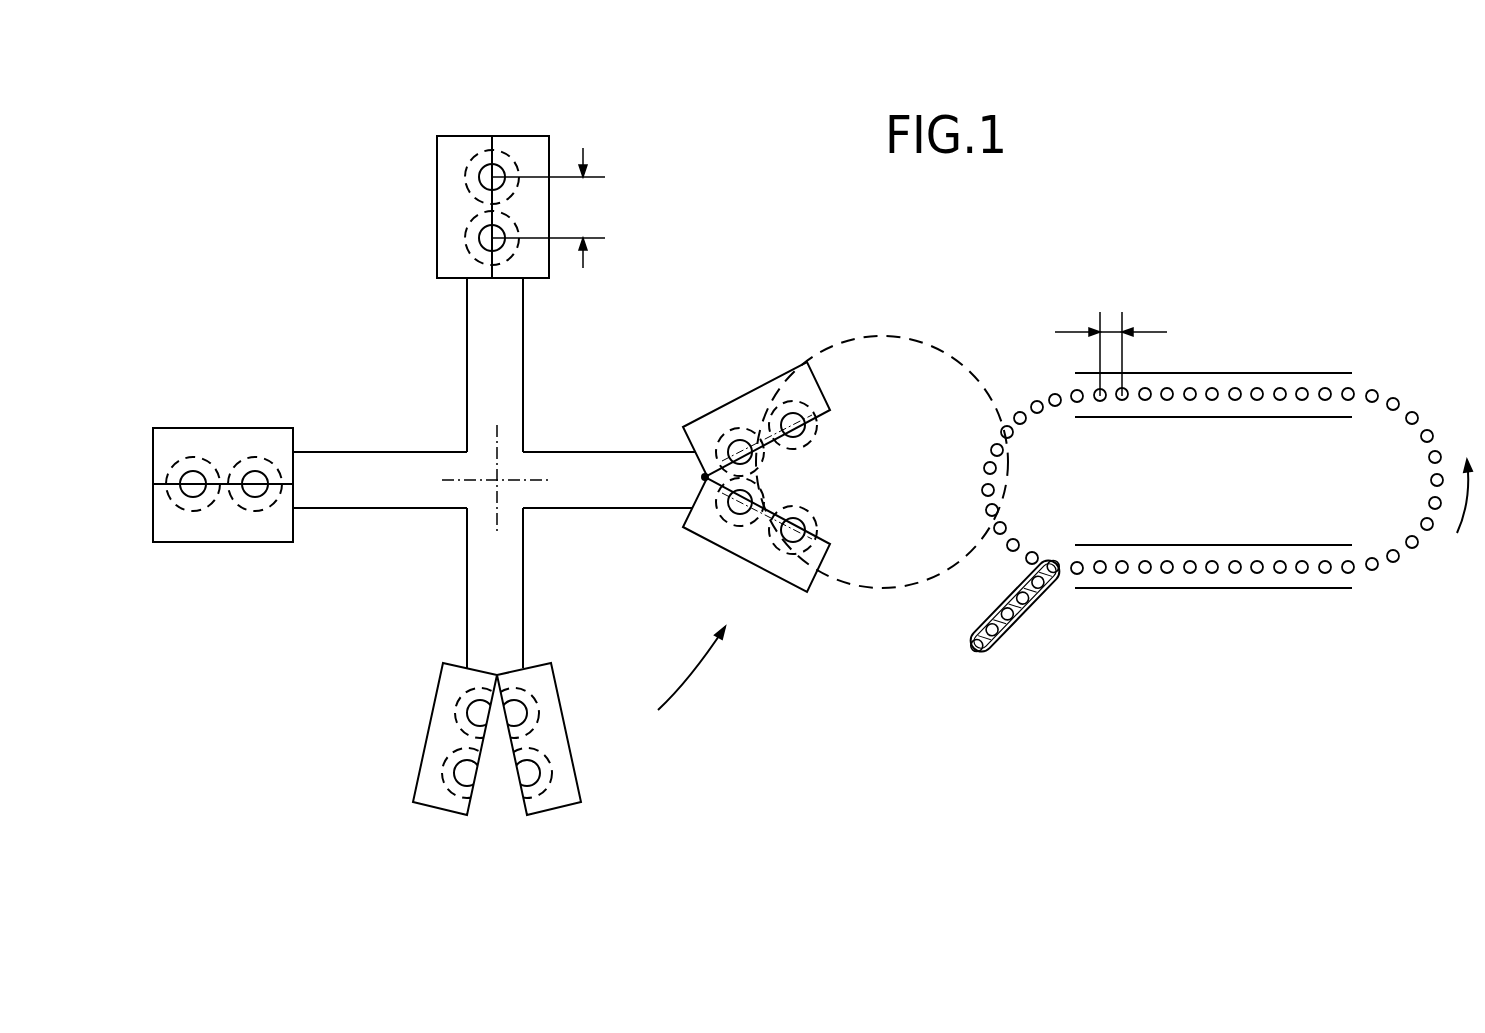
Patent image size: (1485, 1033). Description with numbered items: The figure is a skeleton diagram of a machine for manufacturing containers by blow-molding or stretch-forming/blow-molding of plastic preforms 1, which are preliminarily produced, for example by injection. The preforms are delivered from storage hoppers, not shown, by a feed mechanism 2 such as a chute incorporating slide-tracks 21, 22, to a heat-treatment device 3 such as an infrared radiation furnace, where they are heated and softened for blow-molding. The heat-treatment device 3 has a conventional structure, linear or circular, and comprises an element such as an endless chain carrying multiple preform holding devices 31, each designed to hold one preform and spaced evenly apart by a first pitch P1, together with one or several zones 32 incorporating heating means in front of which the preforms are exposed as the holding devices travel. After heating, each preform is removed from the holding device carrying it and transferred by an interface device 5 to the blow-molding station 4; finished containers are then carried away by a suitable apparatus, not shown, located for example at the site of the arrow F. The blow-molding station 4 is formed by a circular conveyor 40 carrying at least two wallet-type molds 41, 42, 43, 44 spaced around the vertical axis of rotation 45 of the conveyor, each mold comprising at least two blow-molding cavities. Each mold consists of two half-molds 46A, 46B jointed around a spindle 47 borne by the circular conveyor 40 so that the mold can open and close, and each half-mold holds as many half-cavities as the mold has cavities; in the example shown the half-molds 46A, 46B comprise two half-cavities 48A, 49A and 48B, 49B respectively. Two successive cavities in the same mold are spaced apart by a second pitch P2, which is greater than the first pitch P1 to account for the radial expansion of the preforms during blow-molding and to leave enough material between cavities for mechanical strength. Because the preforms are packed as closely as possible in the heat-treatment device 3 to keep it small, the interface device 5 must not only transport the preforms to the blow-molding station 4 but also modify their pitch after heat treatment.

The plastic preforms 1 is at (1014, 606).
The feed mechanism 2 is at (1004, 633).
The slide-track 21 is at (1014, 606).
The slide-track 22 is at (1040, 606).
The heat-treatment device 3 is at (1227, 513).
The preform holding devices 31 is at (1418, 548).
The heating zones 32 is at (1273, 383).
The blow-molding station 4 is at (318, 672).
The circular conveyor 40 is at (510, 577).
The wallet-type mold 41 is at (535, 268).
The wallet-type mold 42 is at (225, 448).
The wallet-type mold 43 is at (543, 690).
The wallet-type mold 44 is at (752, 496).
The vertical axis of rotation 45 is at (497, 480).
The half-mold 46A is at (740, 410).
The half-mold 46B is at (765, 557).
The spindle 47 is at (700, 478).
The half-cavity 48A is at (757, 462).
The half-cavity 48B is at (757, 488).
The half-cavity 49A is at (800, 432).
The half-cavity 49B is at (805, 530).
The interface device 5 is at (935, 336).
The arrow F is at (642, 762).
The first pitch P1 is at (1111, 346).
The second pitch P2 is at (557, 208).